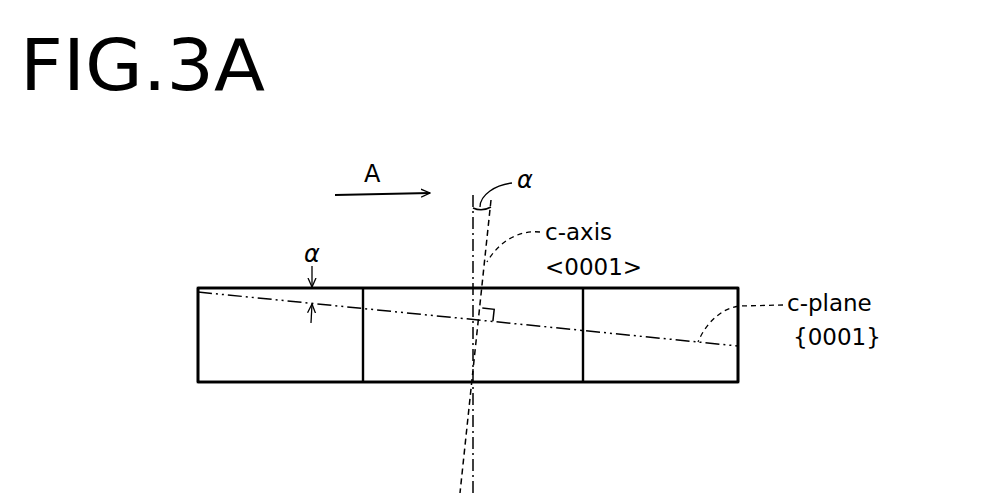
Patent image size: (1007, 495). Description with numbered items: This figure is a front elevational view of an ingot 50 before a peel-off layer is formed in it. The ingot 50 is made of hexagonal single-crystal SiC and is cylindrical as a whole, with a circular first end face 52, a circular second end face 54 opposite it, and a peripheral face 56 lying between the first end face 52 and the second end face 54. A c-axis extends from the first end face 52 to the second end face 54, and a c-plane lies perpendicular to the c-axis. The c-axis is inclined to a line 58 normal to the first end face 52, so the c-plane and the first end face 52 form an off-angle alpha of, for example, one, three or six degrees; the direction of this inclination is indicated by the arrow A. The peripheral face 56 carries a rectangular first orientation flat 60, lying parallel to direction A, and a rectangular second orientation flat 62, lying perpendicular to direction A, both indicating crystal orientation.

The ingot 50 is at (197, 320).
The first end face 52 is at (672, 289).
The second end face 54 is at (247, 383).
The peripheral face 56 is at (210, 348).
The line normal to the first end face 58 is at (470, 243).
The first orientation flat 60 is at (541, 362).
The second orientation flat 62 is at (738, 368).